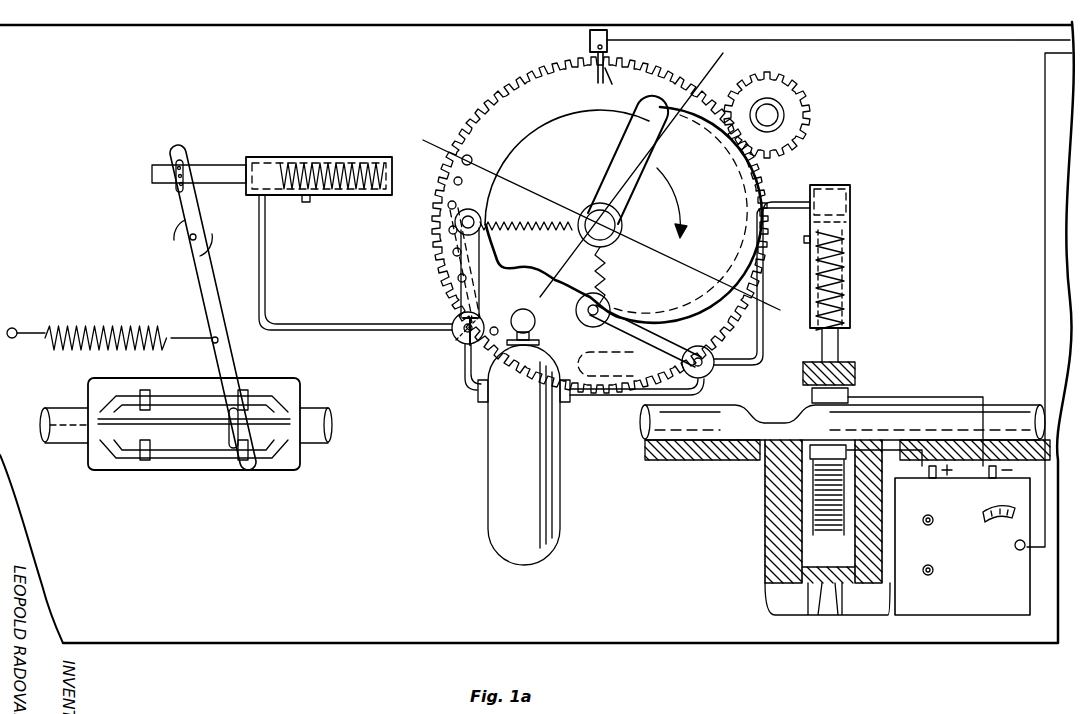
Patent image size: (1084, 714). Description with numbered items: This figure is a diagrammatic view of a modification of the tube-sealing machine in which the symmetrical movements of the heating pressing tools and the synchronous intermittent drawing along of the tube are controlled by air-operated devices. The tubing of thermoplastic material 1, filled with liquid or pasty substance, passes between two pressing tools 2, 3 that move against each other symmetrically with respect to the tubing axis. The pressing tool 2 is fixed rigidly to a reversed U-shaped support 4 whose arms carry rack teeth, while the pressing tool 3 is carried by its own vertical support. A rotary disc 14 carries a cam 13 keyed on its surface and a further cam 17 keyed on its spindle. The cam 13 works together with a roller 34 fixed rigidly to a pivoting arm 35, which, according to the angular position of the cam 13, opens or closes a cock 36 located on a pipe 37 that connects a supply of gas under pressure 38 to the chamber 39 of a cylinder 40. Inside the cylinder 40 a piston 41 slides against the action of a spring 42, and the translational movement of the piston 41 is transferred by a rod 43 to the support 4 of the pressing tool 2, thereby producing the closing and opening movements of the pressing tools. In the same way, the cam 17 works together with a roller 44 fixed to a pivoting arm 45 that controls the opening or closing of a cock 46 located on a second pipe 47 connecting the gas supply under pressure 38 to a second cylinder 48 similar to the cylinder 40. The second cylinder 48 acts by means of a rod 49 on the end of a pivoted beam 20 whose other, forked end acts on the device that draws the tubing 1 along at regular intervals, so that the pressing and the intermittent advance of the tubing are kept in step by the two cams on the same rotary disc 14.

The tubing of thermoplastic material 1 is at (1020, 398).
The pressing tool 2 is at (812, 396).
The pressing tool 3 is at (827, 452).
The reversed U-shaped support 4 is at (855, 373).
The cam 13 is at (667, 103).
The rotary disc 14 is at (555, 75).
The cam 17 is at (522, 140).
The beam 20 is at (200, 291).
The roller 34 is at (584, 320).
The pivoting arm 35 is at (660, 330).
The cock 36 is at (714, 368).
The pipe 37 is at (765, 333).
The supply of gas under pressure 38 is at (497, 447).
The chamber 39 is at (840, 200).
The cylinder 40 is at (850, 264).
The piston 41 is at (838, 226).
The spring 42 is at (830, 280).
The rod 43 is at (833, 343).
The roller 44 is at (466, 216).
The pivoting arm 45 is at (462, 256).
The cock 46 is at (458, 338).
The second pipe 47 is at (338, 330).
The second cylinder 48 is at (309, 160).
The rod 49 is at (220, 170).